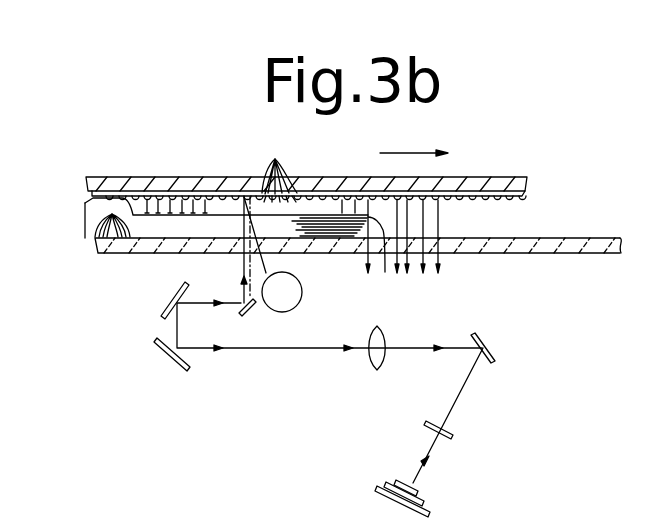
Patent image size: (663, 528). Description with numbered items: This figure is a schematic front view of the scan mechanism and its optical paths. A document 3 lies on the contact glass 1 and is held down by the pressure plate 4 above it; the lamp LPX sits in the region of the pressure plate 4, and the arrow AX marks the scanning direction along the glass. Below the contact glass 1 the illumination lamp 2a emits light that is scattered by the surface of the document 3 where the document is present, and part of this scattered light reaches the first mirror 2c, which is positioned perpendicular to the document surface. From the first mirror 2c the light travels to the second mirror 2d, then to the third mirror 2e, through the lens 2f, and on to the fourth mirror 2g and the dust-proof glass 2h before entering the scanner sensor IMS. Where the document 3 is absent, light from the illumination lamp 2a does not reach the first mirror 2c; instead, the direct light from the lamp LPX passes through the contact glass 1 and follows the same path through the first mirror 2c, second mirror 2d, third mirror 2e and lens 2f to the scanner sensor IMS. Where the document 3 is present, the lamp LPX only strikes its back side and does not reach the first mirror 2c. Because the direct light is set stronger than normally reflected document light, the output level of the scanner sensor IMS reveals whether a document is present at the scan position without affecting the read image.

The contact glass 1 is at (567, 253).
The document 3 is at (262, 249).
The pressure plate 4 is at (190, 177).
The illumination lamp 2a is at (302, 300).
The first mirror 2c is at (248, 314).
The second mirror 2d is at (162, 304).
The third mirror 2e is at (174, 362).
The lens 2f is at (373, 366).
The fourth mirror 2g is at (494, 355).
The dust-proof glass 2h is at (455, 424).
The lamp LPX is at (274, 168).
The axis direction AX is at (414, 142).
The scanner sensor IMS is at (424, 490).